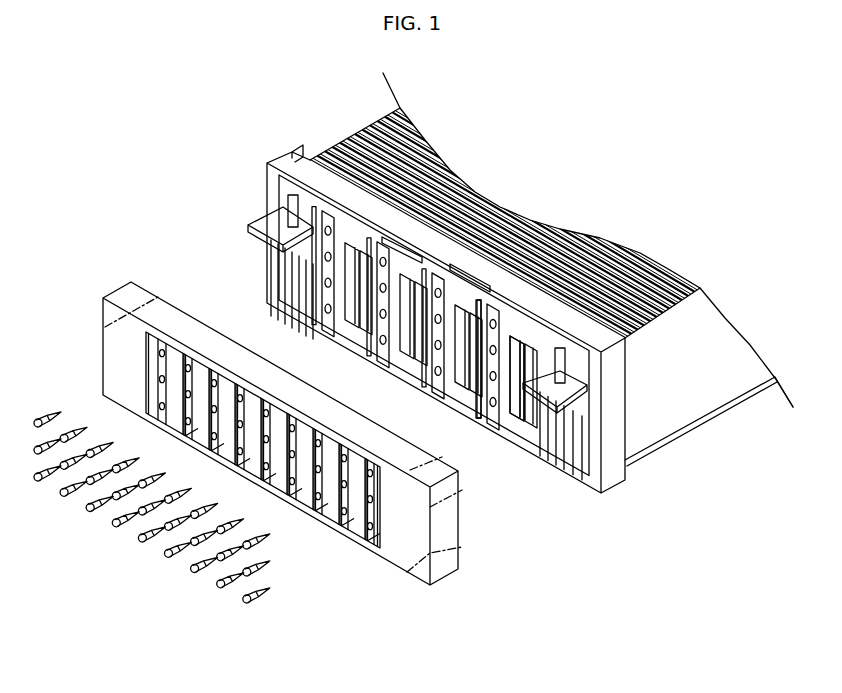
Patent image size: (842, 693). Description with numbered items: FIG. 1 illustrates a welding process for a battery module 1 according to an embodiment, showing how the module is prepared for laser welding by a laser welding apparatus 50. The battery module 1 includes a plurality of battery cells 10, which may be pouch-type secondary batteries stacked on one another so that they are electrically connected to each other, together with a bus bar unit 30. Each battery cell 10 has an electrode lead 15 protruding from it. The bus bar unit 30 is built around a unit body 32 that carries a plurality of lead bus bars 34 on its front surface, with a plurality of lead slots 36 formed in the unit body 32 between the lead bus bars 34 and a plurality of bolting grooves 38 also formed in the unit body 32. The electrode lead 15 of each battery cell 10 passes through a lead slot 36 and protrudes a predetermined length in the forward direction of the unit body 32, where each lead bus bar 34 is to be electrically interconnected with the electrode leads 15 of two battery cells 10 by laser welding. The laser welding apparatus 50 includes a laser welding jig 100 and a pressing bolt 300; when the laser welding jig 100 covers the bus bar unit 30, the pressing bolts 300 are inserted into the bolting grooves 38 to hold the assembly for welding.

The battery module 1 is at (520, 308).
The battery cell 10 is at (551, 279).
The bus bar unit 30 is at (458, 345).
The unit body 32 is at (593, 481).
The lead bus bar 34 is at (498, 412).
The lead slot 36 is at (533, 441).
The bolting groove 38 is at (518, 422).
The electrode lead 15 is at (478, 390).
The laser welding apparatus 50 is at (269, 458).
The laser welding jig 100 is at (308, 462).
The pressing bolt 300 is at (182, 532).